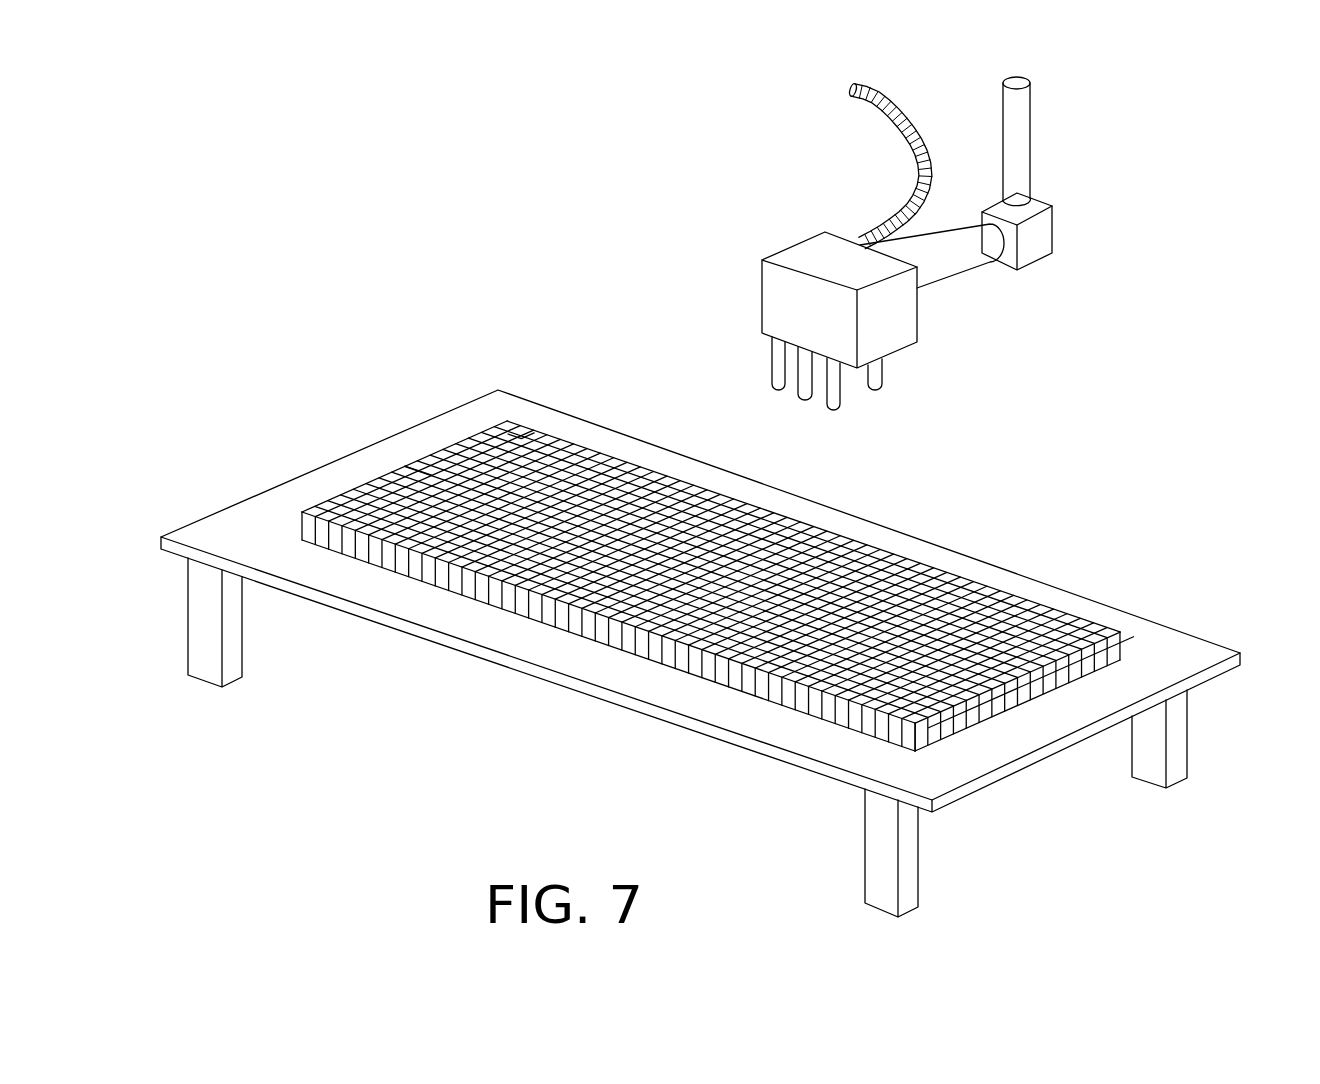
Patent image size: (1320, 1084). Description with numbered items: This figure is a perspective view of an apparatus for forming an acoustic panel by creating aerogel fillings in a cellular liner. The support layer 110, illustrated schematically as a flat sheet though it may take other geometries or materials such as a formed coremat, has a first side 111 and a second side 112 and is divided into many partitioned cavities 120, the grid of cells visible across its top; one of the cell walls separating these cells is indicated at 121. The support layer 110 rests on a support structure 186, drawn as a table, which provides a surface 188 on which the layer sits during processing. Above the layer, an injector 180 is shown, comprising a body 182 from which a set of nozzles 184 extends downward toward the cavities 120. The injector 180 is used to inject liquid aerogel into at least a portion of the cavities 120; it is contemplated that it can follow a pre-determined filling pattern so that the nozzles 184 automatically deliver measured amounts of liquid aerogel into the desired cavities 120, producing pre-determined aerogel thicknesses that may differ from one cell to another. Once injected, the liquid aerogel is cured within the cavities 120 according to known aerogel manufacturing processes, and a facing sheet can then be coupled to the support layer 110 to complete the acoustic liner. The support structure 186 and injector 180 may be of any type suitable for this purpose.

The support layer 110 is at (718, 559).
The first side 111 is at (485, 572).
The second side 112 is at (522, 615).
The partitioned cavities 120 is at (570, 460).
The cell wall 121 is at (420, 477).
The injector 180 is at (963, 248).
The body 182 is at (812, 250).
The nozzles 184 is at (882, 377).
The support structure 186 is at (700, 653).
The surface 188 is at (935, 548).